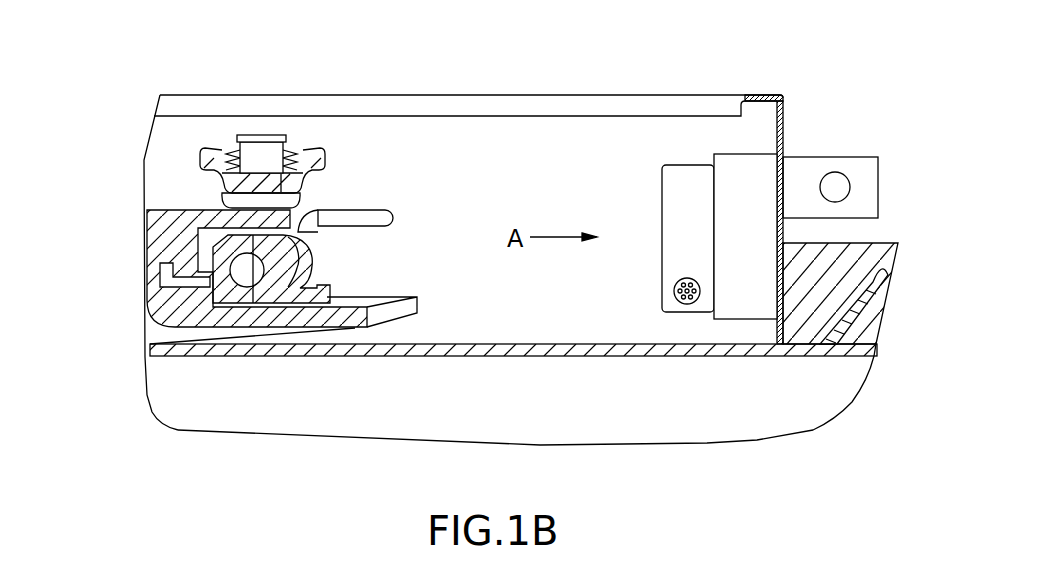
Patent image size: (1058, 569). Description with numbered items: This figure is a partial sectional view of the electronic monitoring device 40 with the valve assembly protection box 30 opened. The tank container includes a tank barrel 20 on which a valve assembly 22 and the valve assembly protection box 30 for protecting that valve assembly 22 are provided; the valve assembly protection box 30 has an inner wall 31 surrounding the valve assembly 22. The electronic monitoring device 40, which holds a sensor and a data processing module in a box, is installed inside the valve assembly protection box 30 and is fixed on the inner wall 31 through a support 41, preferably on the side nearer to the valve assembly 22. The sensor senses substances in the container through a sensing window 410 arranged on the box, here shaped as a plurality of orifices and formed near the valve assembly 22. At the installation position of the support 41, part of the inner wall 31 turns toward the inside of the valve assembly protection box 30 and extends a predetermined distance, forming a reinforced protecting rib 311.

The tank barrel 20 is at (450, 422).
The valve assembly 22 is at (257, 152).
The valve assembly protection box 30 is at (457, 150).
The inner wall 31 is at (785, 132).
The reinforced protecting rib 311 is at (757, 107).
The electronic monitoring device 40 is at (673, 198).
The support 41 is at (742, 153).
The sensing window 410 is at (677, 289).